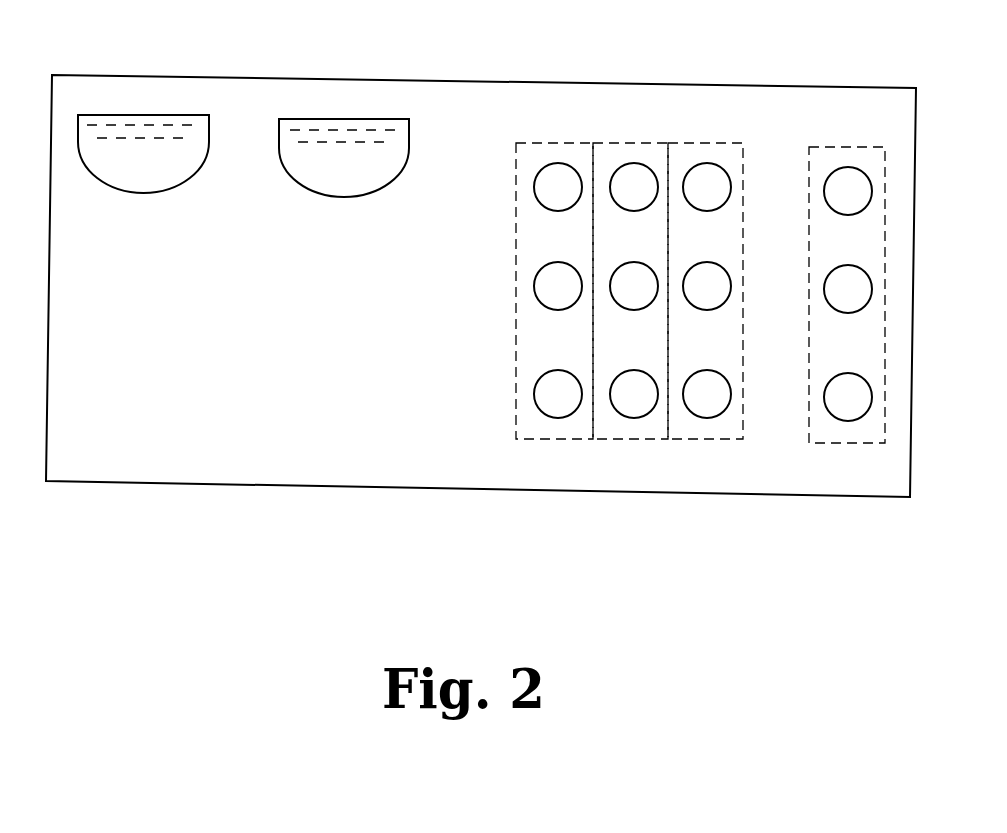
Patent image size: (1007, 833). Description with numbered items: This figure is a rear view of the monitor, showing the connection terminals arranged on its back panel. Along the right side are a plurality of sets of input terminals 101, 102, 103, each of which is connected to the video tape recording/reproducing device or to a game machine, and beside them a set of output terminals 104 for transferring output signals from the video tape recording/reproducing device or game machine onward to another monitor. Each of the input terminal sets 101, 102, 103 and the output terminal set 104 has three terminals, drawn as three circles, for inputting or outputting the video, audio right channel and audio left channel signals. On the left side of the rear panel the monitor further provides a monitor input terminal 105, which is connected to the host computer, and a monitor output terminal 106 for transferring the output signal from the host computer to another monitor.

The input terminal set 101 is at (552, 142).
The input terminal set 102 is at (637, 142).
The input terminal set 103 is at (712, 142).
The output terminal set 104 is at (843, 146).
The monitor input terminal 105 is at (138, 114).
The monitor output terminal 106 is at (343, 118).